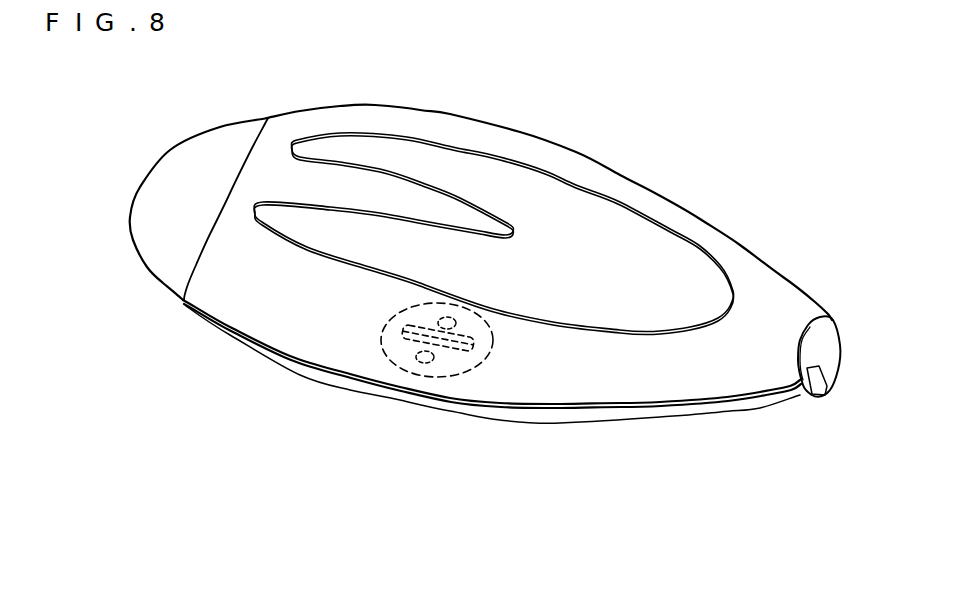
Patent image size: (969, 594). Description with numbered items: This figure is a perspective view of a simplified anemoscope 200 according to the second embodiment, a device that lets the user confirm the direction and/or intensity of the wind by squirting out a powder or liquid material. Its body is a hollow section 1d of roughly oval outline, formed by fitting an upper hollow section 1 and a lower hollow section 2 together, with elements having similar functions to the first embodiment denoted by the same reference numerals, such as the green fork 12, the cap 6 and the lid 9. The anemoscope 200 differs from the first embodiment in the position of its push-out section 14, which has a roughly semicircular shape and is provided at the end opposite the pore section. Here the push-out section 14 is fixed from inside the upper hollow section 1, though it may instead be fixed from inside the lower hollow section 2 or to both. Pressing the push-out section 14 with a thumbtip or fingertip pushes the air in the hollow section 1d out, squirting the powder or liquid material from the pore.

The simplified anemoscope 200 is at (466, 496).
The upper hollow section 1 is at (587, 167).
The push-out section 14 is at (212, 148).
The green fork 12 is at (627, 247).
The hollow section 1d is at (601, 375).
The lower hollow section 2 is at (557, 417).
The cap 6 is at (827, 343).
The lid 9 is at (385, 356).